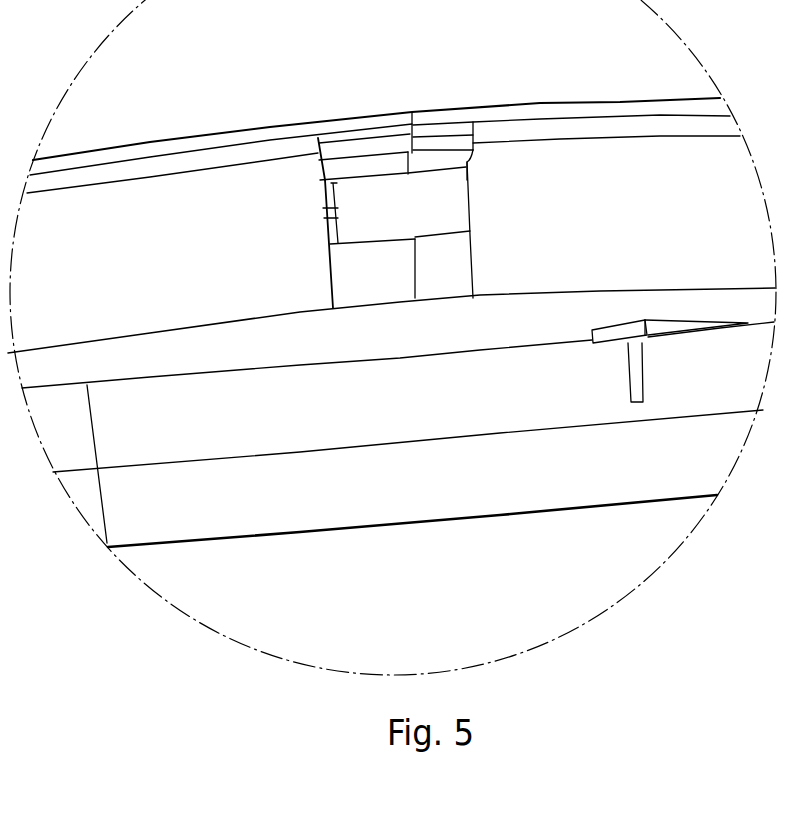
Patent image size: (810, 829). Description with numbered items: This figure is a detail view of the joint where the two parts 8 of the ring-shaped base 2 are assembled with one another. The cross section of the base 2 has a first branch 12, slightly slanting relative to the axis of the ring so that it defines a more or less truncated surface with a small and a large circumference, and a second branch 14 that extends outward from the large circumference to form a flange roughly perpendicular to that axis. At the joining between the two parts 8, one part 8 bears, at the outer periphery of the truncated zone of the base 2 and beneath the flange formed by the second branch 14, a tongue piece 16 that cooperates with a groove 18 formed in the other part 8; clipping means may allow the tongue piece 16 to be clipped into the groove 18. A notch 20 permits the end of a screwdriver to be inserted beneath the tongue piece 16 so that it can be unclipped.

The ring-shaped base 2 is at (257, 103).
The part 8 is at (200, 190).
The first branch 12 is at (258, 302).
The second branch 14 is at (122, 172).
The tongue piece 16 is at (382, 227).
The groove 18 is at (323, 193).
The notch 20 is at (323, 213).